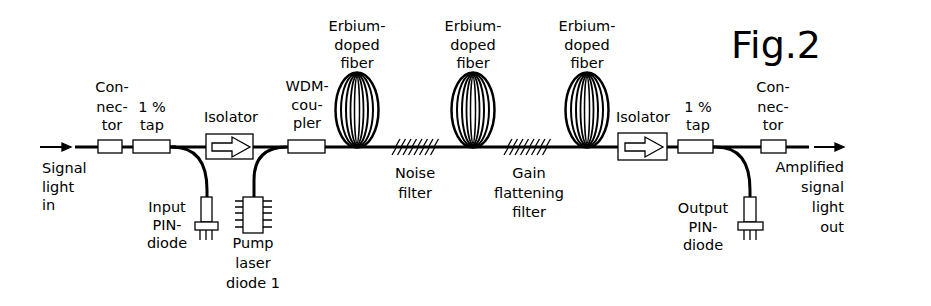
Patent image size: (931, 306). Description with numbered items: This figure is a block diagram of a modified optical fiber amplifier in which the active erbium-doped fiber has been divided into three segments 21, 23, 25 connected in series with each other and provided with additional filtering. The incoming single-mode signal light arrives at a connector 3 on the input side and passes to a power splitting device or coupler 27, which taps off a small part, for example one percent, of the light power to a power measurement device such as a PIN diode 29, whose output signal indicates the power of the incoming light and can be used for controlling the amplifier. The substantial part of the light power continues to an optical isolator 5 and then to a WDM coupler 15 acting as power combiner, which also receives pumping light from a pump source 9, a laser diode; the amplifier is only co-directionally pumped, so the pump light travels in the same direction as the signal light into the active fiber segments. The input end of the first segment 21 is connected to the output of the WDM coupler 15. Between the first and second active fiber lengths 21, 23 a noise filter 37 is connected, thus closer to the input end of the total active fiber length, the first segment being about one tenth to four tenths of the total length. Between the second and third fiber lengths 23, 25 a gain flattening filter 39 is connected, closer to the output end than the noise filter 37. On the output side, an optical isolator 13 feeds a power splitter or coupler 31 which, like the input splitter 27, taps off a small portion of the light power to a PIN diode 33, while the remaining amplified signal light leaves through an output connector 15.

The connector 3 is at (108, 153).
The power splitting device or coupler 27 is at (152, 153).
The PIN diode 29 is at (204, 203).
The optical isolator 5 is at (212, 159).
The pump source 9 is at (258, 197).
The WDM coupler / output connector 15 is at (305, 153).
The first segment of erbium-doped fiber 21 is at (375, 80).
The second segment of erbium-doped fiber 23 is at (491, 80).
The third segment of erbium-doped fiber 25 is at (605, 80).
The noise filter 37 is at (416, 137).
The gain flattening filter 39 is at (525, 137).
The optical isolator 13 is at (627, 160).
The power splitter or coupler 31 is at (695, 153).
The PIN diode 33 is at (757, 218).